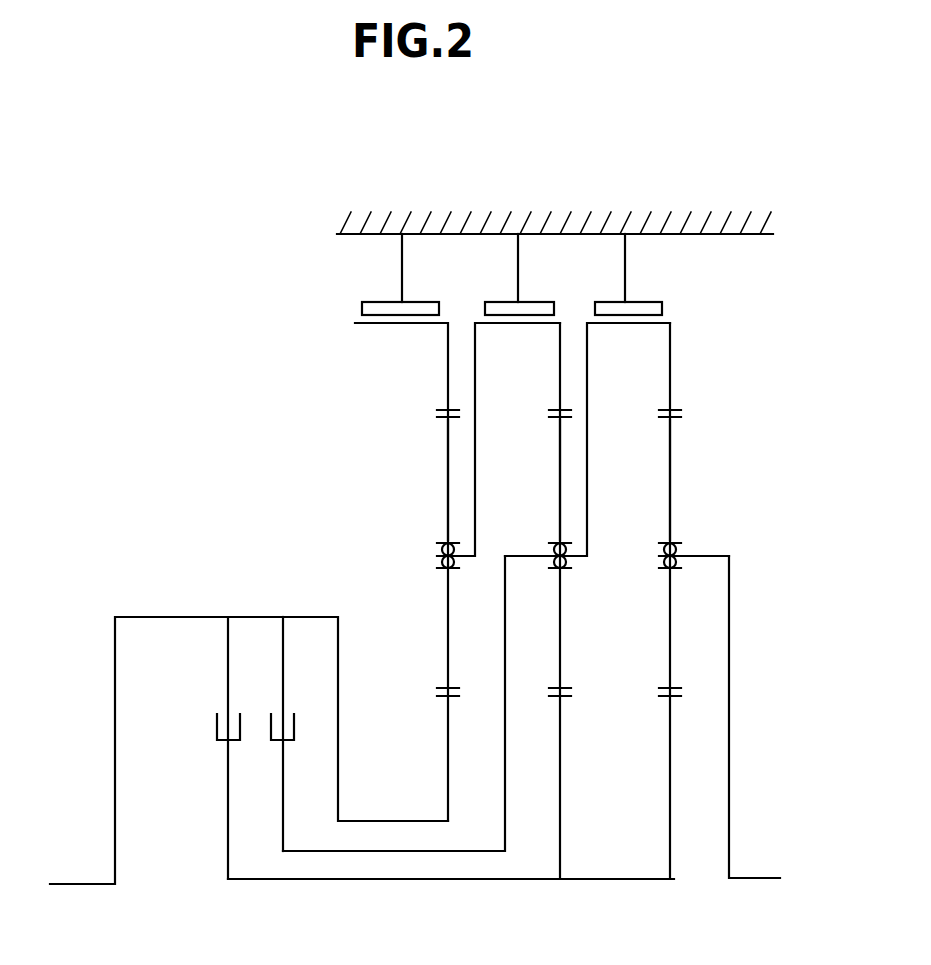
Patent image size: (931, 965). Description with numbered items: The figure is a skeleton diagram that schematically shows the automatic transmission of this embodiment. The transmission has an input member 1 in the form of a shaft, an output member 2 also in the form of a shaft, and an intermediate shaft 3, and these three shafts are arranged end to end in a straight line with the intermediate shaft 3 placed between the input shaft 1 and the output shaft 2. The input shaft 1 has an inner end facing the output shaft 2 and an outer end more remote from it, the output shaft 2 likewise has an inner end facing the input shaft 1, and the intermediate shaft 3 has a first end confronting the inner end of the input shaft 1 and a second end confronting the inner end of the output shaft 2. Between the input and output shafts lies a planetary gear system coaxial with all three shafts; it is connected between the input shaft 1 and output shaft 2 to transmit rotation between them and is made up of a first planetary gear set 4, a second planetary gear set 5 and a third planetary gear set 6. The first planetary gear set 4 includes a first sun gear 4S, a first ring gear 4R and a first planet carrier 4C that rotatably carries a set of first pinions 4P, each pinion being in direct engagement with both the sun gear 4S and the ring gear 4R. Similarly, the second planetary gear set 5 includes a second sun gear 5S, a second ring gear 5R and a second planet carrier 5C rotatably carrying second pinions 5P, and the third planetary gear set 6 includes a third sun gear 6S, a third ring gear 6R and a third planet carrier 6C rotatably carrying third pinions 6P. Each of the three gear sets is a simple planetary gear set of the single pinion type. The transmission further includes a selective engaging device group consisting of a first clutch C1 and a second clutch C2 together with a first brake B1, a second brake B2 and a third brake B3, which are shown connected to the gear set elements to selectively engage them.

The input member 1 is at (108, 884).
The output member 2 is at (747, 879).
The intermediate shaft 3 is at (537, 886).
The first planetary gear set 4 is at (457, 572).
The second planetary gear set 5 is at (476, 601).
The third planetary gear set 6 is at (679, 601).
The first ring gear 4R is at (448, 380).
The second ring gear 5R is at (560, 370).
The third ring gear 6R is at (670, 371).
The first pinions 4P is at (448, 478).
The second pinions 5P is at (560, 466).
The third pinions 6P is at (670, 477).
The first planet carrier 4C is at (467, 557).
The second planet carrier 5C is at (522, 556).
The third planet carrier 6C is at (710, 556).
The first sun gear 4S is at (448, 745).
The second sun gear 5S is at (560, 745).
The third sun gear 6S is at (670, 755).
The first brake B1 is at (424, 302).
The second brake B2 is at (544, 302).
The third brake B3 is at (658, 302).
The first clutch C1 is at (220, 741).
The second clutch C2 is at (285, 741).